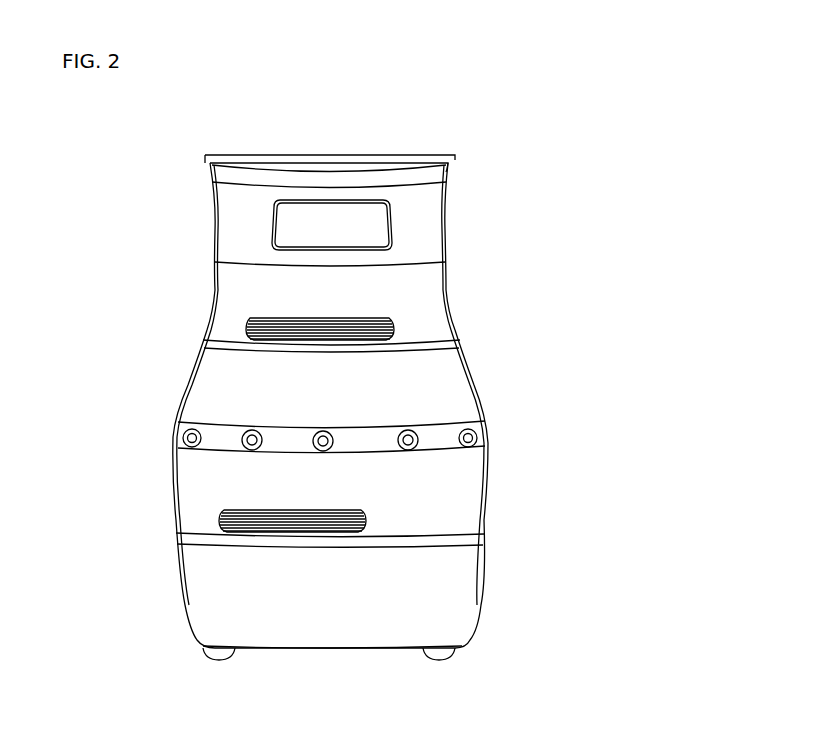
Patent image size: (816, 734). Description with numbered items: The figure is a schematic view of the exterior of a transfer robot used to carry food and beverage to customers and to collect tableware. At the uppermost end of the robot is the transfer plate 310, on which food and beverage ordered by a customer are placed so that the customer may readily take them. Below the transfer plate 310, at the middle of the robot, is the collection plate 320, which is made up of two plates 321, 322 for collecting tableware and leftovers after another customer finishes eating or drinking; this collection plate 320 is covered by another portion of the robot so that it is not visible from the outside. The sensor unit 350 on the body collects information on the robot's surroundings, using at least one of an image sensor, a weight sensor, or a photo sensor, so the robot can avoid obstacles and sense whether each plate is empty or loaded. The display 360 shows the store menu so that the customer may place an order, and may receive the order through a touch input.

The transfer plate 310 is at (455, 157).
The display 360 is at (392, 235).
The collection plate 320 is at (575, 312).
The plate 321 is at (455, 340).
The plate 322 is at (485, 538).
The sensor unit 350 is at (178, 441).